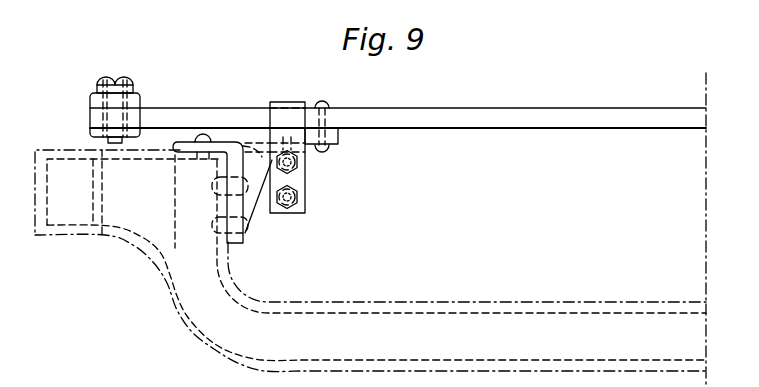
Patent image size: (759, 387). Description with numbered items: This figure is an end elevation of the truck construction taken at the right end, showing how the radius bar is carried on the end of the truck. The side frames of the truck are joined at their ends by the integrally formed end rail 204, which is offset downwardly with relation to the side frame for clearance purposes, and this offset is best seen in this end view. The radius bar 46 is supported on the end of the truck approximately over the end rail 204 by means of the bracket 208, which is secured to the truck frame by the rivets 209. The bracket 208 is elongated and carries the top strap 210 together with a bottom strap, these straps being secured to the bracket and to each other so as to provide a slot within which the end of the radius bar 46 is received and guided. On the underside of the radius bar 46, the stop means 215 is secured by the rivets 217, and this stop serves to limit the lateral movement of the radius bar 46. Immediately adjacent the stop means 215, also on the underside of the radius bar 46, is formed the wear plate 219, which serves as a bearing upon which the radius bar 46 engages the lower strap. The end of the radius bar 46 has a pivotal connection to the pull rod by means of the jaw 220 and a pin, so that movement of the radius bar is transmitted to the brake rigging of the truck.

The radius bar 46 is at (493, 111).
The end rail 204 is at (473, 313).
The bracket 208 is at (245, 213).
The rivets 209 is at (214, 218).
The top strap 210 is at (300, 102).
The stop means 215 is at (338, 141).
The rivets 217 is at (325, 101).
The wear plate 219 is at (263, 130).
The jaw 220 is at (89, 103).